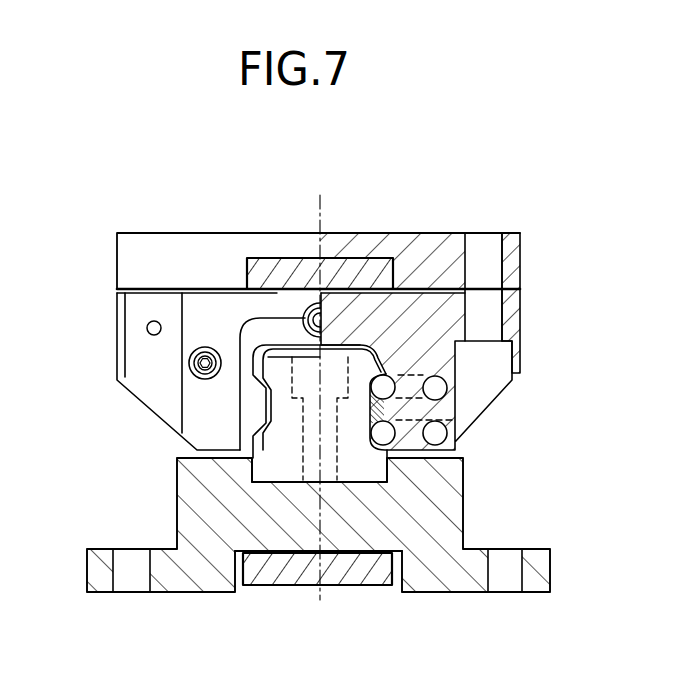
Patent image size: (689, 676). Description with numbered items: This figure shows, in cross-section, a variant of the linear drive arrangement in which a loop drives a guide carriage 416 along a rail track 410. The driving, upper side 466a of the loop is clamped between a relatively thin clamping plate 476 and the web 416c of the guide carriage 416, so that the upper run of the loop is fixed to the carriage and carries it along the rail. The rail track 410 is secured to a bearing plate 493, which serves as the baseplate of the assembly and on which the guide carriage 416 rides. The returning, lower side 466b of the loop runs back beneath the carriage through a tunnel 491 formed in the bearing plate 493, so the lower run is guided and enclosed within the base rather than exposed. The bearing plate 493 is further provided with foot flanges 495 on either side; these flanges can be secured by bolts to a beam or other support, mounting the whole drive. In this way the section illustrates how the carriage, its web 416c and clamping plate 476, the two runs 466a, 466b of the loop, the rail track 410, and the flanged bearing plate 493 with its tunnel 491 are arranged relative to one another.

The rail track 410 is at (257, 480).
The guide carriage 416 is at (530, 335).
The web of the guide carriage 416c is at (410, 295).
The driving upper side of the loop 466a is at (358, 270).
The returning lower side of the loop 466b is at (287, 588).
The clamping plate 476 is at (512, 273).
The tunnel 491 is at (402, 597).
The bearing plate 493 is at (463, 490).
The foot flanges 495 is at (92, 565).